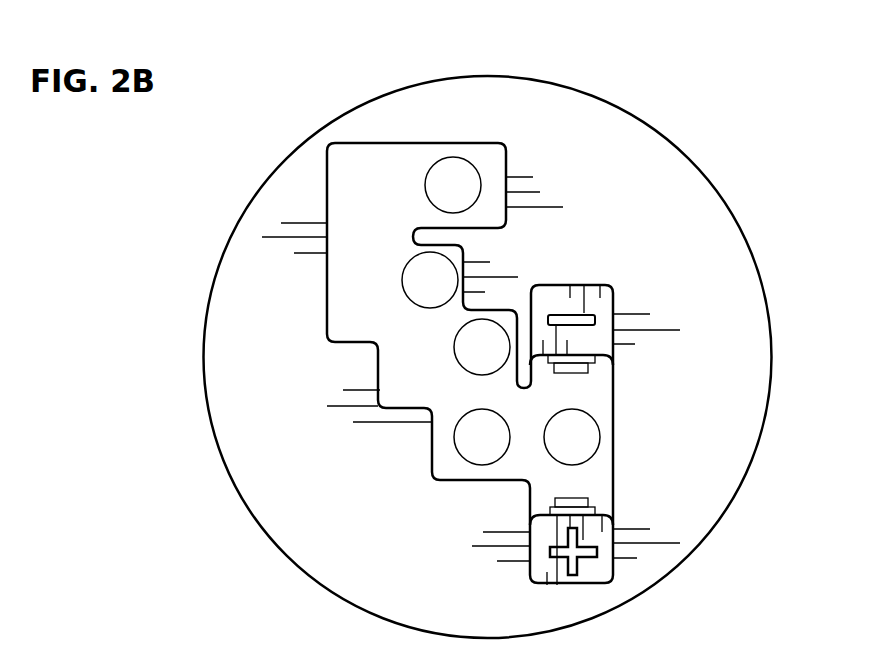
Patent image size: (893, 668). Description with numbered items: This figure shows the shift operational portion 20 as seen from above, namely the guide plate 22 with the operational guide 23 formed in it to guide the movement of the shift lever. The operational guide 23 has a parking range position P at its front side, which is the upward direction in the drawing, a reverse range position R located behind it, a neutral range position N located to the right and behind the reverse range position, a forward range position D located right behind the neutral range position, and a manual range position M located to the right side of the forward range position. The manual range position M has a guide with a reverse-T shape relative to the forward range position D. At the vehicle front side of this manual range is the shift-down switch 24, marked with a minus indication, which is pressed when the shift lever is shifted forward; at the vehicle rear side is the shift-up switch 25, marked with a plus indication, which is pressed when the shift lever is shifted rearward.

The shift operational portion 20 is at (528, 327).
The guide plate 22 is at (733, 388).
The operational guide 23 is at (435, 143).
The shift-down switch 24 is at (592, 370).
The shift-up switch 25 is at (592, 502).